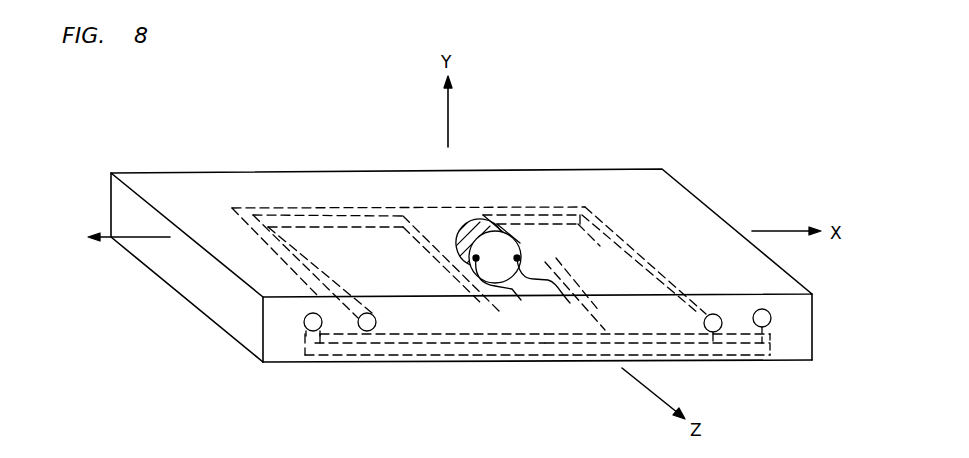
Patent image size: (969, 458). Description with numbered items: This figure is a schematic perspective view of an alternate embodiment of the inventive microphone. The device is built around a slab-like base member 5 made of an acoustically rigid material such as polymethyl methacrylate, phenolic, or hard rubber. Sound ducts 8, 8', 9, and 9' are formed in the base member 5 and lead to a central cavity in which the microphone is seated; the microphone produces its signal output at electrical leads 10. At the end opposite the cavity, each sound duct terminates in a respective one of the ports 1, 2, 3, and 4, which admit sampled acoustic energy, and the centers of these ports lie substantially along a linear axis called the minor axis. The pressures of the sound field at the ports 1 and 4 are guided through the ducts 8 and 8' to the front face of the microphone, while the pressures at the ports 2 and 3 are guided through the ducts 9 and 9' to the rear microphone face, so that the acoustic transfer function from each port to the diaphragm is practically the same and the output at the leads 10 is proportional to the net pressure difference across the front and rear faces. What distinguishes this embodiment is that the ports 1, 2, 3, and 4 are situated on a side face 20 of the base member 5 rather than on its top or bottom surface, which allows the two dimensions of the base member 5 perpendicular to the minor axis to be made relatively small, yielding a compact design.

The port 1 is at (307, 324).
The port 2 is at (373, 323).
The port 3 is at (717, 321).
The port 4 is at (769, 332).
The base member 5 is at (226, 310).
The sound duct 8 is at (425, 360).
The sound duct 8' is at (657, 358).
The sound duct 9 is at (408, 251).
The sound duct 9' is at (594, 255).
The electrical leads 10 is at (500, 306).
The side face 20 is at (294, 352).